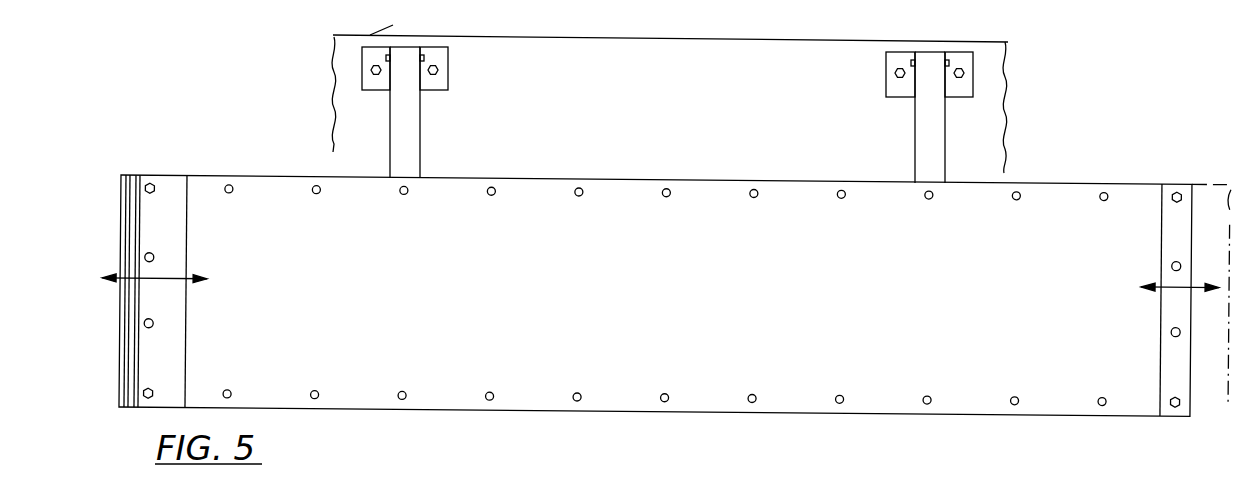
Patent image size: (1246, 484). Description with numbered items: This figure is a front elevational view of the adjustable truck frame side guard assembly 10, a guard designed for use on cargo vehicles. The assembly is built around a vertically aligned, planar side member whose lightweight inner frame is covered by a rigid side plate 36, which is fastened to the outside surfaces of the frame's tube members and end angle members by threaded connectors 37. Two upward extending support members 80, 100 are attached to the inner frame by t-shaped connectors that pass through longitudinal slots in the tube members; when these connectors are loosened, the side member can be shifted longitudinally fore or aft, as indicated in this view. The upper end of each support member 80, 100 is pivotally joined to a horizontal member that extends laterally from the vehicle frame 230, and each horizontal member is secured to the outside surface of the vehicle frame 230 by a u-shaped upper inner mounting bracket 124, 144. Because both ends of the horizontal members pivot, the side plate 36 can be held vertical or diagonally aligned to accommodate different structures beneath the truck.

The side guard assembly 10 is at (196, 96).
The side plate 36 is at (700, 307).
The threaded connectors 37 is at (140, 206).
The support member 80 is at (412, 137).
The support member 100 is at (940, 138).
The upper inner mounting bracket 124 is at (362, 77).
The upper inner mounting bracket 144 is at (885, 83).
The vehicle frame 230 is at (672, 88).